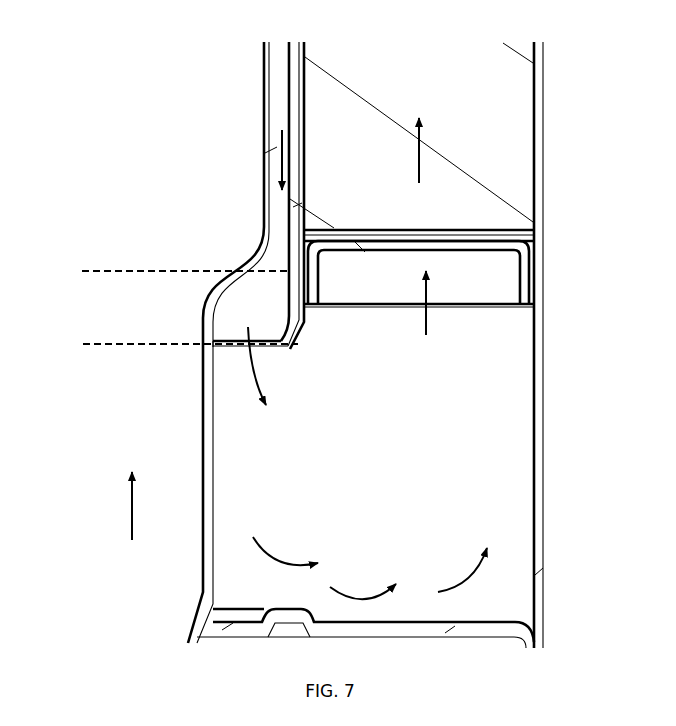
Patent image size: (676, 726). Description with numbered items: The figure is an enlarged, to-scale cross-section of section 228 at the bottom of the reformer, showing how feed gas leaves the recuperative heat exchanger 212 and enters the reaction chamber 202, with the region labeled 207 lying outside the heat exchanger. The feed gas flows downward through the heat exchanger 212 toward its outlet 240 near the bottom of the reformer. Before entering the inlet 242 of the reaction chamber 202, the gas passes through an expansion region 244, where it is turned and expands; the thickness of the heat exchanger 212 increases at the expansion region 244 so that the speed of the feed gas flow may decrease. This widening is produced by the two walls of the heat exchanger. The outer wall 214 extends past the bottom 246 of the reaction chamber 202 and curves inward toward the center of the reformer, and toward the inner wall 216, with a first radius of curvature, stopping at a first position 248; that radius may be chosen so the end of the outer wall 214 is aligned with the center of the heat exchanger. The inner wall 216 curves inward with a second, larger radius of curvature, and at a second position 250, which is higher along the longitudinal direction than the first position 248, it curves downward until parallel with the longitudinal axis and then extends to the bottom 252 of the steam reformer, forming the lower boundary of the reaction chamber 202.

The reaction chamber 202 is at (411, 147).
The outer chamber region 207 is at (140, 303).
The recuperative heat exchanger 212 is at (280, 48).
The outer wall 214 is at (301, 322).
The inner wall 216 is at (268, 223).
The section 228 is at (567, 72).
The outlet 240 is at (275, 277).
The inlet 242 is at (438, 218).
The expansion region 244 is at (196, 286).
The bottom 246 is at (541, 223).
The first position 248 is at (100, 343).
The second position 250 is at (97, 270).
The bottom 252 is at (552, 621).